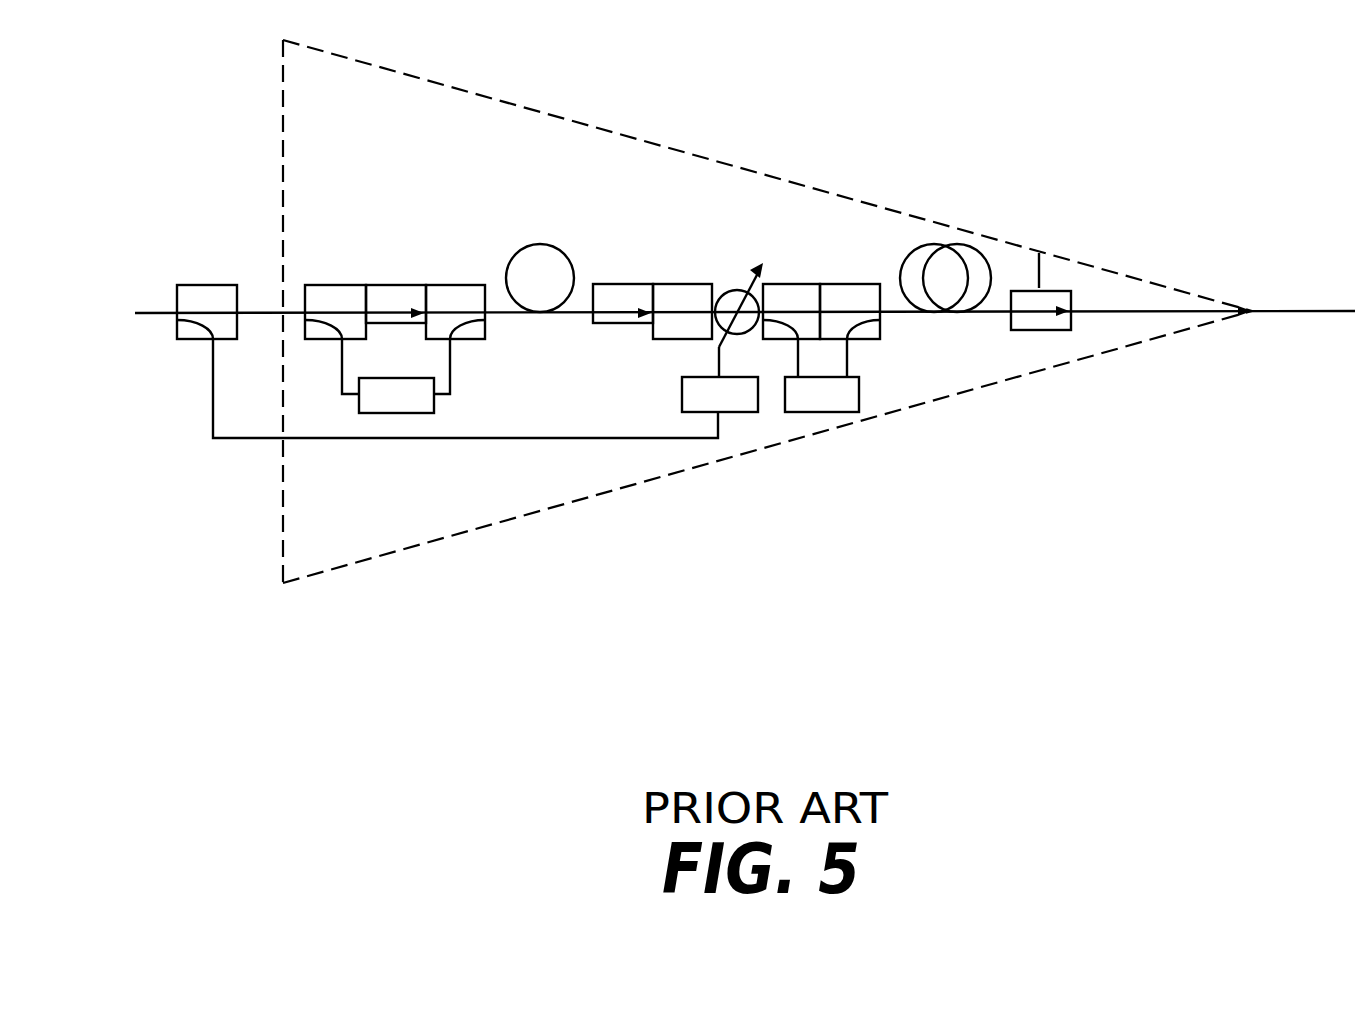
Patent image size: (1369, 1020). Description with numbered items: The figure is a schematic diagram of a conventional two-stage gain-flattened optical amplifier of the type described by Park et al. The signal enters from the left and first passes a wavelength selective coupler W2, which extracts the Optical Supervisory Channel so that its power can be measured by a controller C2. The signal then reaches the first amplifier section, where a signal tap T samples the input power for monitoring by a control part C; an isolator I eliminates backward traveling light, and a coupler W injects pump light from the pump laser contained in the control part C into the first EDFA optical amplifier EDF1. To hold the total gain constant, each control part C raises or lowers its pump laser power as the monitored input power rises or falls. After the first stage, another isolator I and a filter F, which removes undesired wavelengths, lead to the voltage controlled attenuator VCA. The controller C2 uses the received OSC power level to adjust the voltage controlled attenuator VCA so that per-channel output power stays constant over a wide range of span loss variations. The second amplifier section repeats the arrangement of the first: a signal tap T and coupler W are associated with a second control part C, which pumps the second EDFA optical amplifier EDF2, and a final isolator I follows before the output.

The wavelength selective coupler W2 is at (447, 344).
The signal tap T is at (562, 322).
The isolator I is at (718, 290).
The coupler W is at (653, 322).
The control part C is at (609, 395).
The EDFA optical amplifier EDF1 is at (539, 297).
The filter F is at (682, 294).
The voltage controlled attenuator VCA is at (739, 288).
The controller C2 is at (720, 395).
The EDFA optical amplifier EDF2 is at (945, 297).